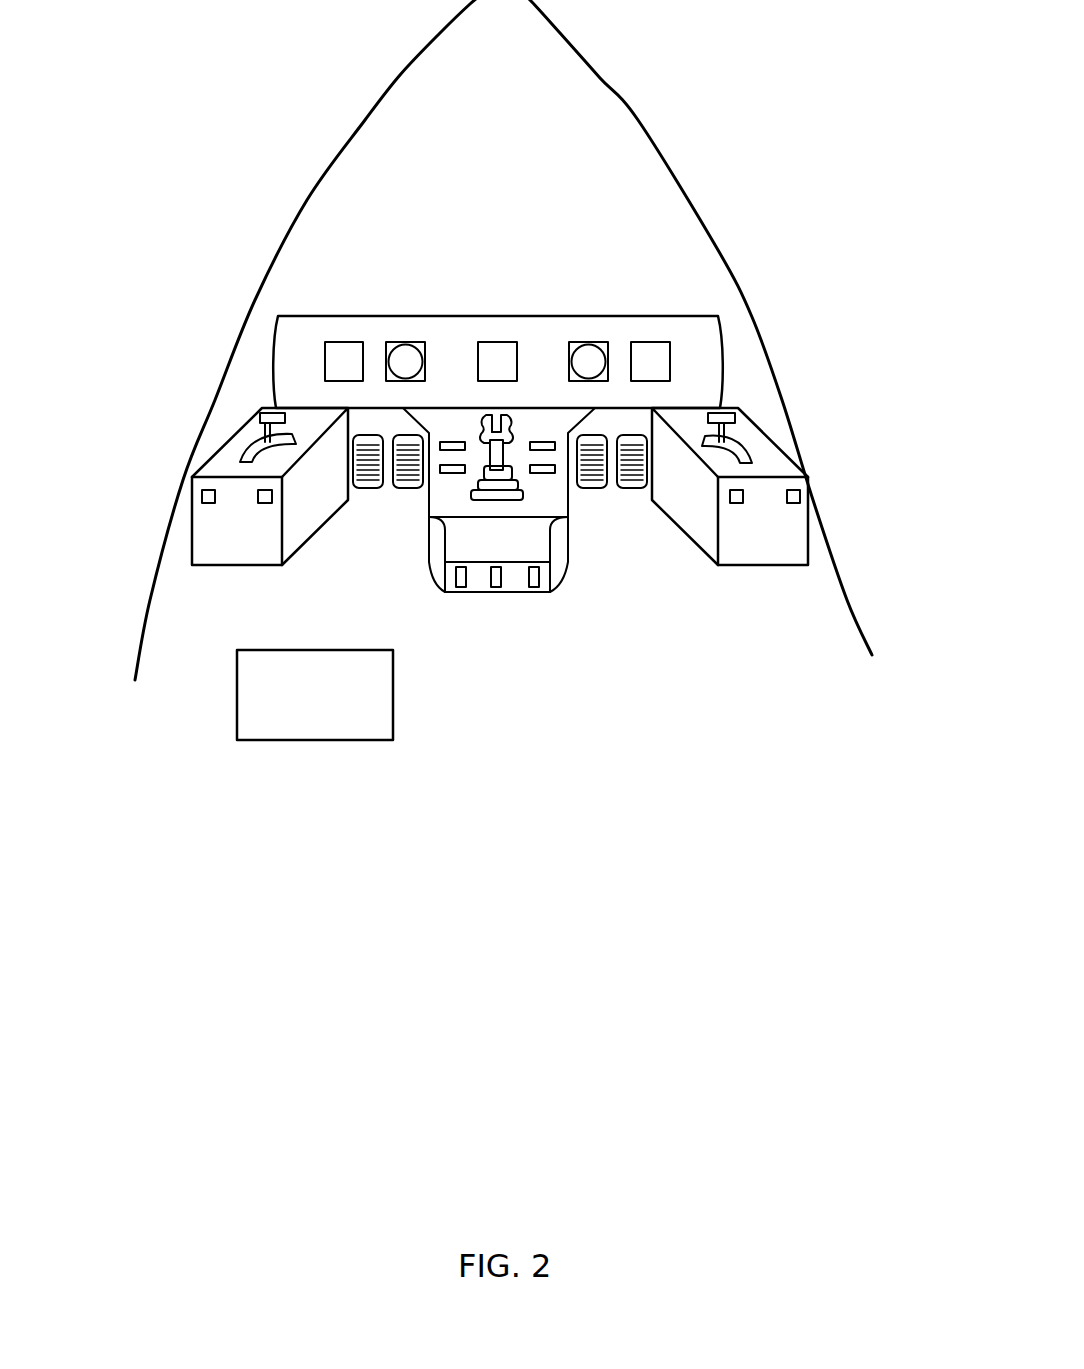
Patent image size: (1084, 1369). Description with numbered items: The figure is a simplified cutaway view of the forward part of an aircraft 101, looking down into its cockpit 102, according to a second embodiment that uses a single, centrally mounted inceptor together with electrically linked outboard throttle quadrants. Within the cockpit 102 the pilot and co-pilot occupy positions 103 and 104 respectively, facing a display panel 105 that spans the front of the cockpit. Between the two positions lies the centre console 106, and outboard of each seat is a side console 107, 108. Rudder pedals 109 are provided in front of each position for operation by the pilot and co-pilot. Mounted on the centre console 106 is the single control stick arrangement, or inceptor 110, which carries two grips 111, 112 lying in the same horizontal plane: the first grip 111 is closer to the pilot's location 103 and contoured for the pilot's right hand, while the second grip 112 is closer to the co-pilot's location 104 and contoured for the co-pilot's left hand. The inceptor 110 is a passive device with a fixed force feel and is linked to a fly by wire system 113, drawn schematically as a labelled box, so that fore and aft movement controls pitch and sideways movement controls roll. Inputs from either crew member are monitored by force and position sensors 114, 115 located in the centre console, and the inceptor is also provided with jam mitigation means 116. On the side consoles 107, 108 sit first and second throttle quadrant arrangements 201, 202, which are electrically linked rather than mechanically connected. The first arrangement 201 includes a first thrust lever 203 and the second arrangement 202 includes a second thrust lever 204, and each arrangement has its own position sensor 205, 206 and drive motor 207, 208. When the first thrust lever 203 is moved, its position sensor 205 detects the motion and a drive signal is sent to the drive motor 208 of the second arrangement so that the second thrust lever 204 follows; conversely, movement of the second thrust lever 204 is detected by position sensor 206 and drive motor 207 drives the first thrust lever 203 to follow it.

The aircraft 101 is at (608, 72).
The cockpit 102 is at (630, 728).
The pilot position 103 is at (345, 593).
The co-pilot position 104 is at (693, 593).
The display panel 105 is at (457, 325).
The centre console 106 is at (488, 507).
The side console 107 is at (240, 545).
The side console 108 is at (793, 545).
The rudder pedals 109 is at (368, 489).
The inceptor 110 is at (490, 458).
The first grip 111 is at (480, 418).
The second grip 112 is at (542, 410).
The fly by wire system 113 is at (393, 695).
The force sensor 114 is at (459, 590).
The position sensor 115 is at (496, 590).
The jam mitigation means 116 is at (534, 590).
The first throttle quadrant arrangement 201 is at (244, 458).
The second throttle quadrant arrangement 202 is at (750, 452).
The first thrust lever 203 is at (257, 412).
The second thrust lever 204 is at (735, 410).
The position sensor 205 is at (206, 500).
The position sensor 206 is at (731, 502).
The drive motor 207 is at (268, 500).
The drive motor 208 is at (795, 498).